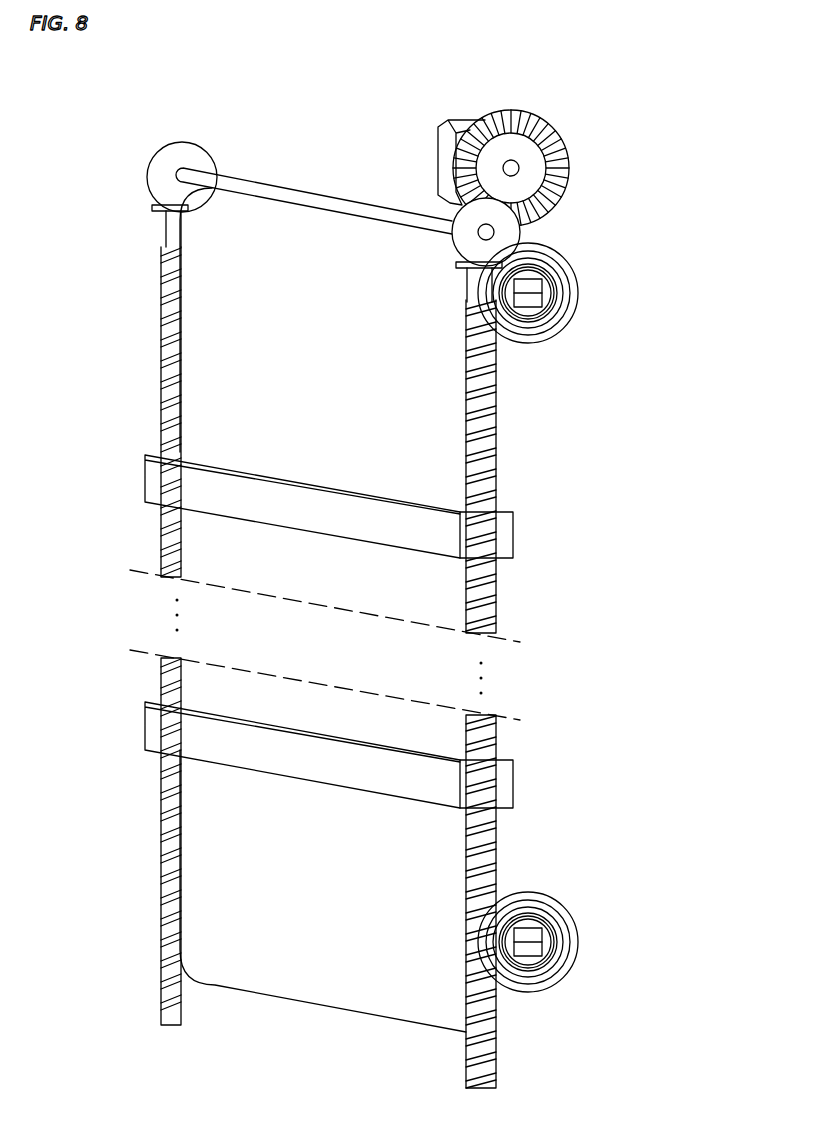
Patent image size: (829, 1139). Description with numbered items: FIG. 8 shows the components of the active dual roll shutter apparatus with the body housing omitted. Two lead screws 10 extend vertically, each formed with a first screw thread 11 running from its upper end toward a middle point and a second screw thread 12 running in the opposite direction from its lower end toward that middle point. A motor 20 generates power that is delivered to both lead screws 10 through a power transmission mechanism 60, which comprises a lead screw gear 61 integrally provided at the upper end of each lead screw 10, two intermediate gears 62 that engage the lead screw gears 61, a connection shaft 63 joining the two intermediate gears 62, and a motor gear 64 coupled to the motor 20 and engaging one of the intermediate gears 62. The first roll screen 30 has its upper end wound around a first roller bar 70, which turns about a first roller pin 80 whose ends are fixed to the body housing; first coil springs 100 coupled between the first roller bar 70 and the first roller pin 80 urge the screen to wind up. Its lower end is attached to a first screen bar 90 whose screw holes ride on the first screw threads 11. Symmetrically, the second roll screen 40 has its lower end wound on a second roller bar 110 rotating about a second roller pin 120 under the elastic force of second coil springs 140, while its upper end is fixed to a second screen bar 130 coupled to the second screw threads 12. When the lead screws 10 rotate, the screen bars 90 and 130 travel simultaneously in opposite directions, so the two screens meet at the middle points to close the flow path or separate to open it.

The lead screw 10 is at (329, 873).
The first screw thread 11 is at (158, 362).
The second screw thread 12 is at (152, 846).
The motor 20 is at (443, 122).
The first roll screen 30 is at (230, 296).
The second roll screen 40 is at (210, 934).
The power transmission mechanism 60 is at (314, 162).
The lead screw gear 61 is at (158, 205).
The intermediate gear 62 is at (184, 170).
The connection shaft 63 is at (302, 197).
The motor gear 64 is at (562, 170).
The first roller bar 70 is at (556, 283).
The first roller pin 80 is at (560, 312).
The first coil spring 100 is at (540, 322).
The first screen bar 90 is at (165, 480).
The second roller bar 110 is at (562, 930).
The second roller pin 120 is at (552, 950).
The second screen bar 130 is at (160, 732).
The second coil spring 140 is at (545, 968).